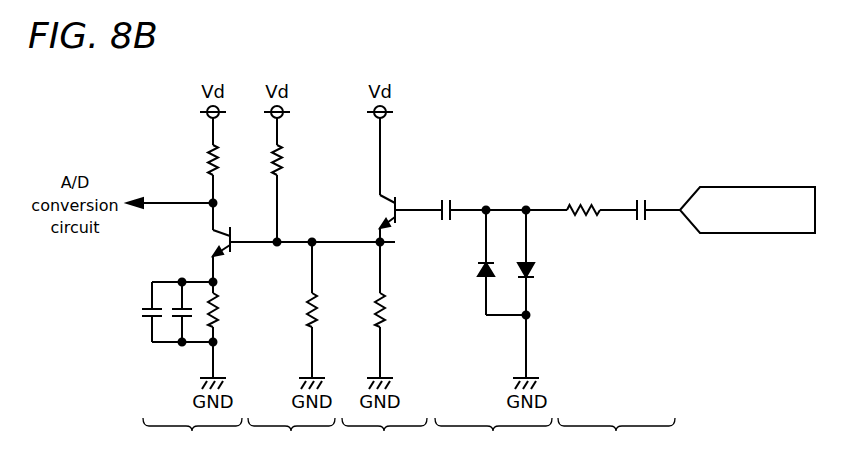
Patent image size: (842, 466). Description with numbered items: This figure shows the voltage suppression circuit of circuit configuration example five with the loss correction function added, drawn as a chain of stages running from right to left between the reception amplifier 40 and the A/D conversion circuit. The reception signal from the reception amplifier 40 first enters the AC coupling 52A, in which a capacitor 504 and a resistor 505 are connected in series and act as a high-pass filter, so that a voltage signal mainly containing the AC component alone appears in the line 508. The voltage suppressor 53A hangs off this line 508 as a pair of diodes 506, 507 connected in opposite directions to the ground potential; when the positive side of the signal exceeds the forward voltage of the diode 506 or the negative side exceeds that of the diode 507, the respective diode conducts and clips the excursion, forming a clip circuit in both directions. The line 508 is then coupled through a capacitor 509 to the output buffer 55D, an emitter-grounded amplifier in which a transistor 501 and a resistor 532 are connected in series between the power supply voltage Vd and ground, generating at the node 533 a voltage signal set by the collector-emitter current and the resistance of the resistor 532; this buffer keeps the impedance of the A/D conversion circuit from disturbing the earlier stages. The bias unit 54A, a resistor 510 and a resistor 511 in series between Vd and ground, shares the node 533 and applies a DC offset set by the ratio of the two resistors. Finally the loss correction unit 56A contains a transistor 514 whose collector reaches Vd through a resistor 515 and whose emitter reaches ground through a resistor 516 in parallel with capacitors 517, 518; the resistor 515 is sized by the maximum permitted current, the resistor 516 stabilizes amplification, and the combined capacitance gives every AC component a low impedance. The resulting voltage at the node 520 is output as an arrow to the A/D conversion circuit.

The reception amplifier 40 is at (777, 187).
The transistor 501 is at (396, 198).
The capacitor 504 is at (641, 200).
The resistor 505 is at (578, 205).
The diode 506 is at (535, 270).
The diode 507 is at (478, 270).
The line 508 is at (505, 208).
The capacitor 509 is at (446, 198).
The resistor 510 is at (283, 153).
The resistor 511 is at (309, 298).
The transistor 514 is at (231, 228).
The resistor 515 is at (208, 151).
The resistor 516 is at (216, 320).
The capacitor 517 is at (178, 303).
The capacitor 518 is at (150, 308).
The node 520 is at (211, 200).
The resistor 532 is at (383, 296).
The node 533 is at (382, 242).
The AC coupling 52A is at (616, 437).
The voltage suppressor 53A is at (493, 437).
The bias unit 54A is at (291, 437).
The output buffer 55D is at (384, 437).
The loss correction unit 56A is at (192, 437).